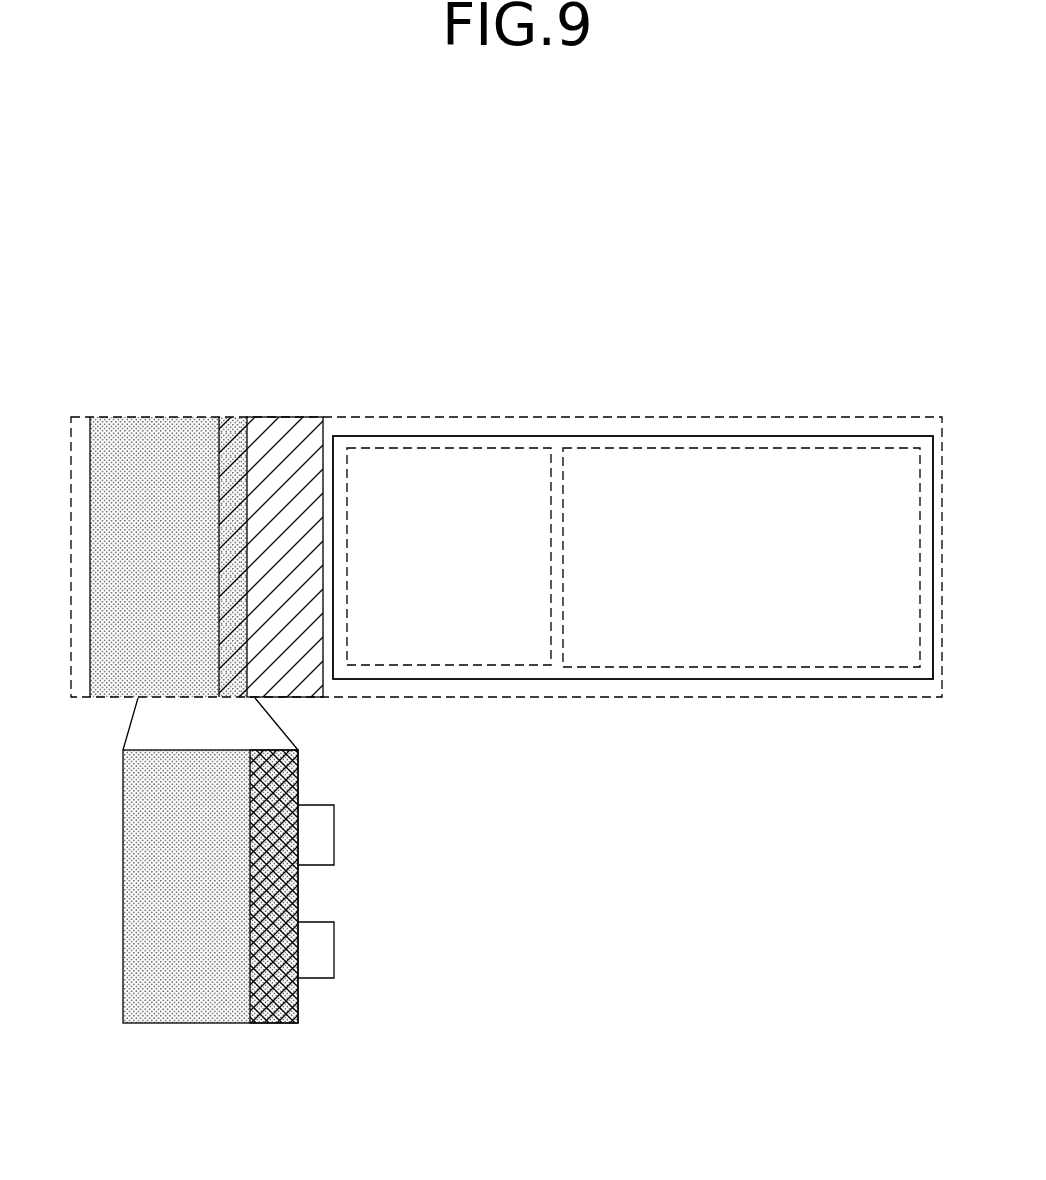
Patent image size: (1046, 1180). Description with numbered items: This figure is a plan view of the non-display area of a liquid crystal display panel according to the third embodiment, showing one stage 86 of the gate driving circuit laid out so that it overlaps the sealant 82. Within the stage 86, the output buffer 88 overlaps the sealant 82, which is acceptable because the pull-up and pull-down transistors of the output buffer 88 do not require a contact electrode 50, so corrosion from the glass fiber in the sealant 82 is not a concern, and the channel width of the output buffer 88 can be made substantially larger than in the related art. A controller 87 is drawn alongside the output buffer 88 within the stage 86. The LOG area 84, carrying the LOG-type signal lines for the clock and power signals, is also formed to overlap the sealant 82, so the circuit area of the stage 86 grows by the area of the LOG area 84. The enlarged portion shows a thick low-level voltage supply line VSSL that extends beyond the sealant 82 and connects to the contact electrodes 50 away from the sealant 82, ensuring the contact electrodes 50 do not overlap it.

The sealant 82 is at (152, 427).
The LOG area 84 is at (303, 433).
The stage 86 is at (613, 437).
The controller 87 is at (400, 448).
The output buffer 88 is at (648, 447).
The contact electrode 50 is at (334, 950).
The low-level voltage supply line VSSL is at (273, 1025).